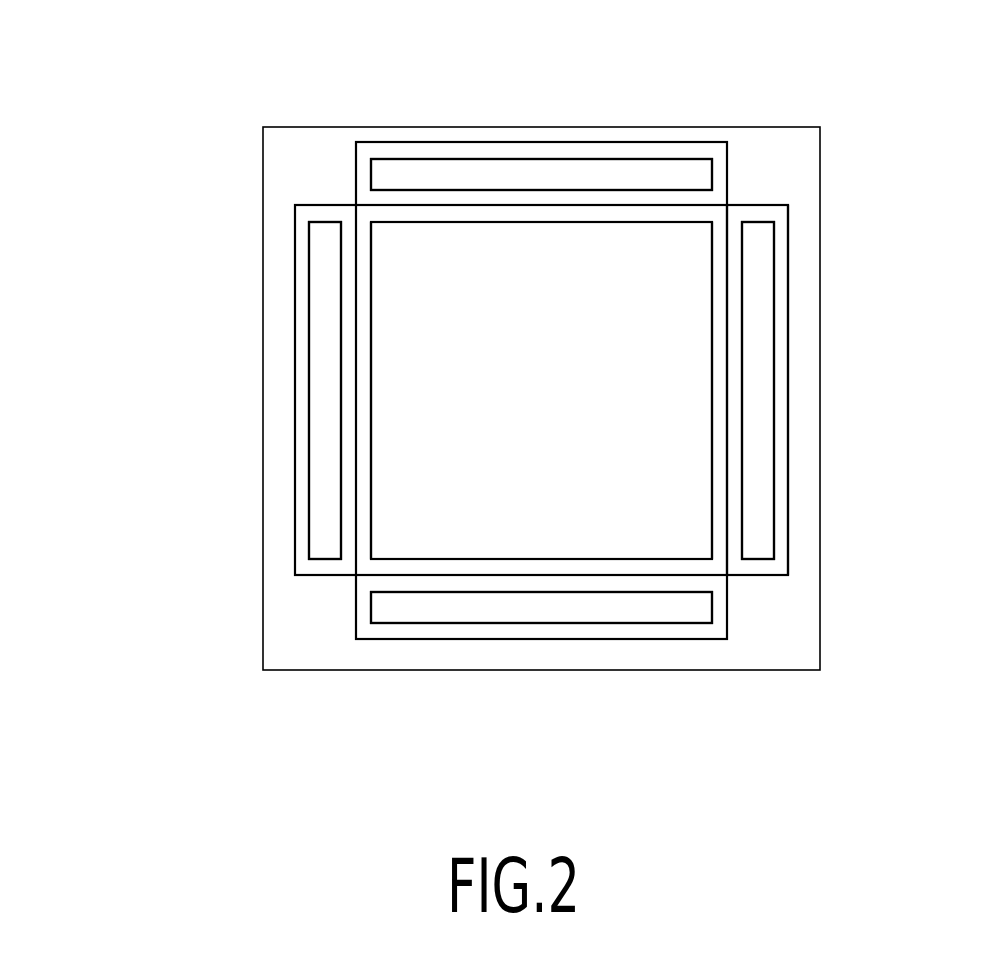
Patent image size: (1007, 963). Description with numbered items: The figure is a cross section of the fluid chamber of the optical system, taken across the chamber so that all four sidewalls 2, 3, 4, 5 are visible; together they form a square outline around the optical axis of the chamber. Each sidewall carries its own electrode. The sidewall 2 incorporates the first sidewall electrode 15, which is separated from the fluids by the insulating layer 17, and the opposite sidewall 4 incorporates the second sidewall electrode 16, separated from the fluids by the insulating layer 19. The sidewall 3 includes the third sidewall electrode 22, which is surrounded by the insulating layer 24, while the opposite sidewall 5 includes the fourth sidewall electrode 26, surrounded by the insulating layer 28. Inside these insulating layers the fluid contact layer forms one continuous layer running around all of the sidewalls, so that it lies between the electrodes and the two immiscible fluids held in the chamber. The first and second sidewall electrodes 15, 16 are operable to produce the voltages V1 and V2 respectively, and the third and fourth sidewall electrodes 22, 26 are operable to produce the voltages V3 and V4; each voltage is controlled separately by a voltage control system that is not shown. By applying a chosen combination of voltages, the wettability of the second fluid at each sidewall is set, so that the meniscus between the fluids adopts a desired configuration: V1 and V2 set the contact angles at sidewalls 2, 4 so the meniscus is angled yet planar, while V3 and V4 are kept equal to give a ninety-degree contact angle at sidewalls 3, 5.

The sidewall 2 is at (535, 220).
The sidewall 3 is at (371, 388).
The sidewall 4 is at (545, 559).
The sidewall 5 is at (714, 331).
The first sidewall electrode 15 is at (656, 607).
The second sidewall electrode 16 is at (450, 173).
The insulating layer 17 is at (708, 584).
The insulating layer 19 is at (377, 198).
The third sidewall electrode 22 is at (323, 297).
The insulating layer 24 is at (352, 356).
The fourth sidewall electrode 26 is at (760, 239).
The insulating layer 28 is at (735, 301).
The voltage V1 is at (417, 607).
The voltage V2 is at (665, 173).
The voltage V3 is at (325, 510).
The voltage V4 is at (757, 464).